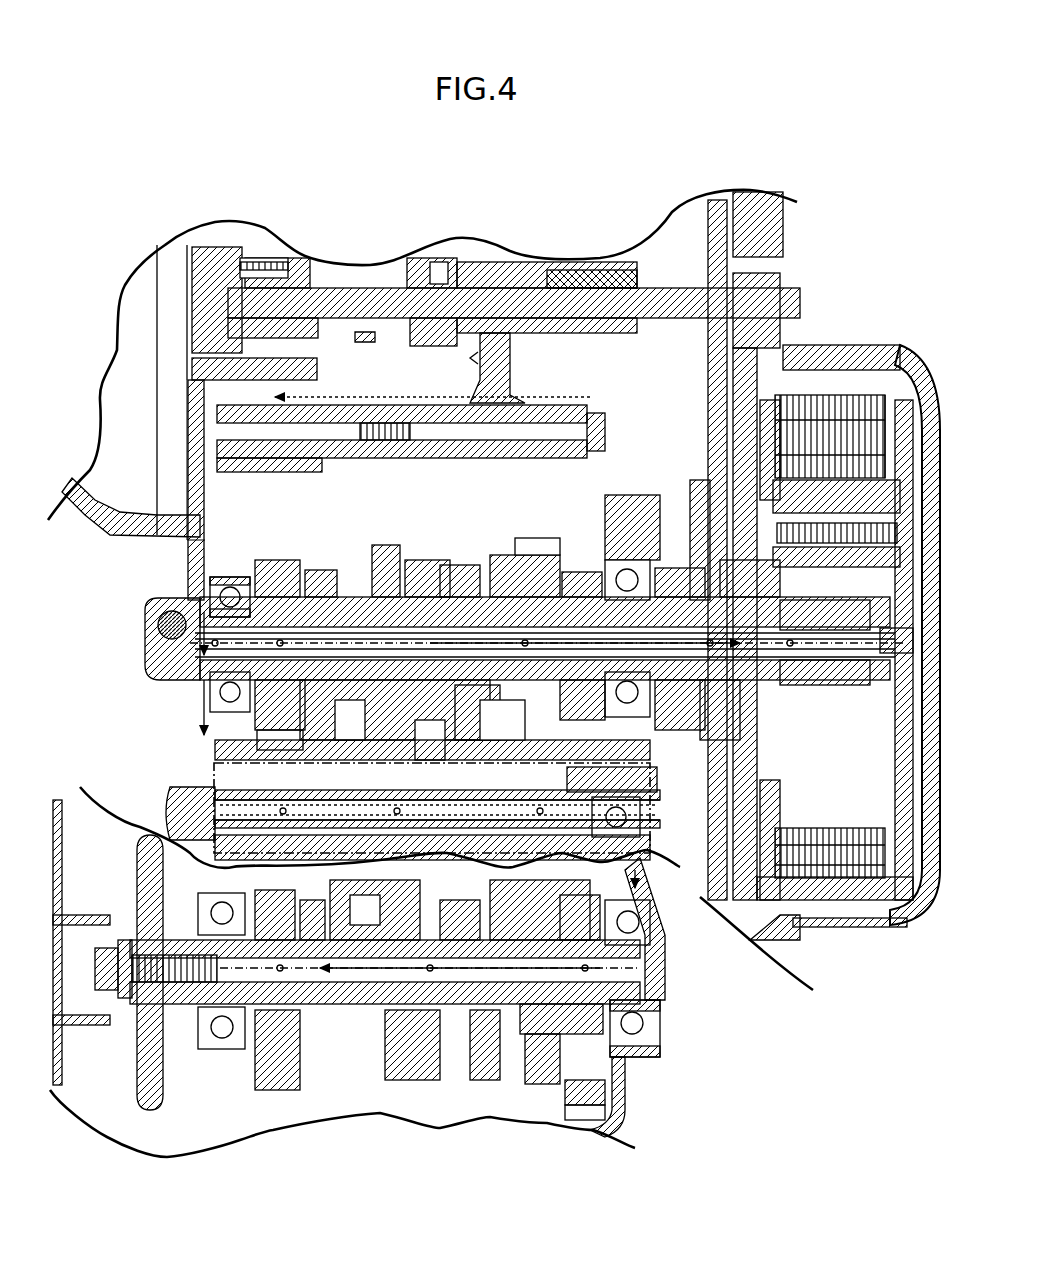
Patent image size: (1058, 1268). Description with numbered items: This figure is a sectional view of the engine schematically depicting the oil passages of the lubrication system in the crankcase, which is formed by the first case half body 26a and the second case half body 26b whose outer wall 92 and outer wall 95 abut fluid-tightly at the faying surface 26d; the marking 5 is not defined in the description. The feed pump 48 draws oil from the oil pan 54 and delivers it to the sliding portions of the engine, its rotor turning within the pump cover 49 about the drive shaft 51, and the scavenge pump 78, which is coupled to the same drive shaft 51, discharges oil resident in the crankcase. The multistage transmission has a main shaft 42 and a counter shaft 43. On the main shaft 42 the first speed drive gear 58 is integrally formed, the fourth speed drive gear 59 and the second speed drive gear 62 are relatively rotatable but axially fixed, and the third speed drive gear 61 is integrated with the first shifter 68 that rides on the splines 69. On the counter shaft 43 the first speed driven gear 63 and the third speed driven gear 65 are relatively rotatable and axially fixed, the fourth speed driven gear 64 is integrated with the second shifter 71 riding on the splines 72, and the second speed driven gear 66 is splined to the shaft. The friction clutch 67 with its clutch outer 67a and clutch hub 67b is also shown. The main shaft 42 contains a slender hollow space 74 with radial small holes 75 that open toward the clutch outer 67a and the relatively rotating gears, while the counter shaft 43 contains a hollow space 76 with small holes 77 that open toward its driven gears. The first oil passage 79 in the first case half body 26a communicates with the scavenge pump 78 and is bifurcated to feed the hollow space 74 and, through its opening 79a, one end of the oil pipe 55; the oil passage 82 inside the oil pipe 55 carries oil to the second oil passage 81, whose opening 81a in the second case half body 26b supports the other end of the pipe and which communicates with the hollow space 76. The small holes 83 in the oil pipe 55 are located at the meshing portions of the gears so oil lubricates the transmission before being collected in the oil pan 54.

The transmission unit 5 is at (210, 765).
The first case half body 26a is at (153, 447).
The second case half body 26b is at (567, 407).
The faying surface 26d is at (420, 837).
The main shaft 42 is at (218, 617).
The counter shaft 43 is at (657, 987).
The feed pump 48 is at (280, 262).
The pump cover 49 is at (247, 357).
The drive shaft 51 is at (653, 297).
The oil pan 54 is at (478, 358).
The oil pipe 55 is at (490, 705).
The first speed drive gear 58 is at (577, 570).
The fourth speed drive gear 59 is at (533, 537).
The third speed drive gear 61 is at (392, 543).
The second speed drive gear 62 is at (280, 563).
The first speed driven gear 63 is at (583, 1110).
The fourth speed driven gear 64 is at (537, 1084).
The third speed driven gear 65 is at (410, 1087).
The second speed driven gear 66 is at (273, 1100).
The friction clutch 67 is at (885, 905).
The clutch outer 67a is at (830, 883).
The clutch hub 67b is at (917, 847).
The first shifter 68 is at (423, 580).
The splines 69 is at (447, 590).
The second shifter 71 is at (507, 1040).
The splines 72 is at (530, 1030).
The hollow space 74 is at (360, 640).
The small holes 75 is at (285, 615).
The hollow space 76 is at (370, 947).
The small holes 77 is at (293, 940).
The scavenge pump 78 is at (440, 250).
The first oil passage 79 is at (420, 270).
The opening 79a is at (183, 797).
The second oil passage 81 is at (653, 900).
The opening 81a is at (640, 812).
The oil passage 82 is at (355, 765).
The small holes 83 is at (283, 808).
The outer wall 92 is at (327, 840).
The outer wall 95 is at (510, 840).